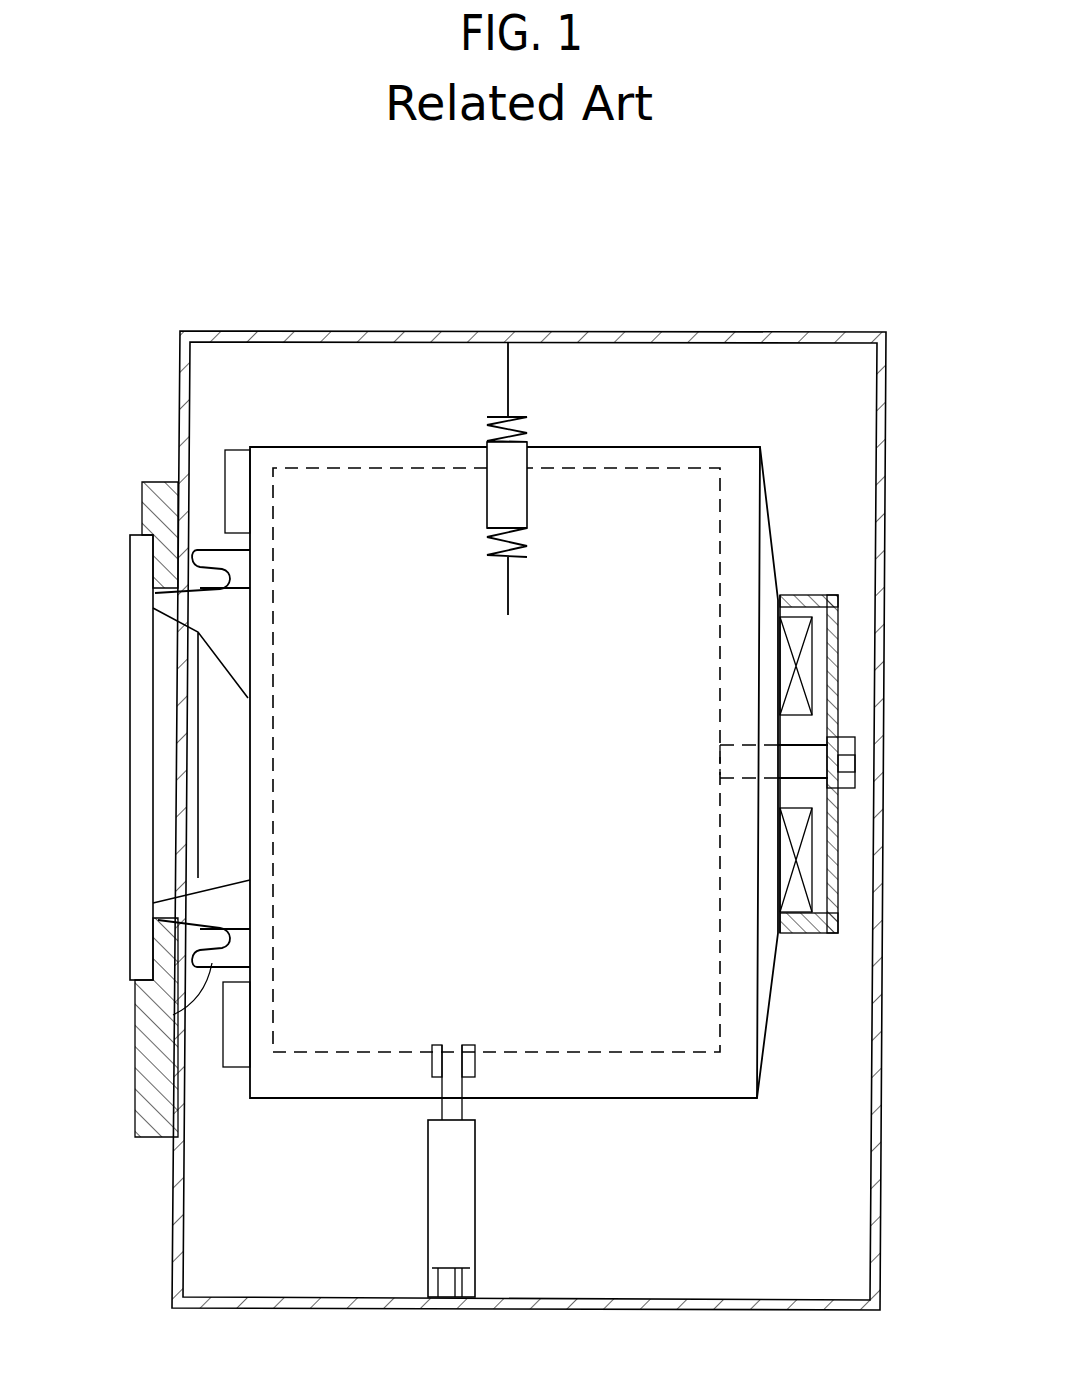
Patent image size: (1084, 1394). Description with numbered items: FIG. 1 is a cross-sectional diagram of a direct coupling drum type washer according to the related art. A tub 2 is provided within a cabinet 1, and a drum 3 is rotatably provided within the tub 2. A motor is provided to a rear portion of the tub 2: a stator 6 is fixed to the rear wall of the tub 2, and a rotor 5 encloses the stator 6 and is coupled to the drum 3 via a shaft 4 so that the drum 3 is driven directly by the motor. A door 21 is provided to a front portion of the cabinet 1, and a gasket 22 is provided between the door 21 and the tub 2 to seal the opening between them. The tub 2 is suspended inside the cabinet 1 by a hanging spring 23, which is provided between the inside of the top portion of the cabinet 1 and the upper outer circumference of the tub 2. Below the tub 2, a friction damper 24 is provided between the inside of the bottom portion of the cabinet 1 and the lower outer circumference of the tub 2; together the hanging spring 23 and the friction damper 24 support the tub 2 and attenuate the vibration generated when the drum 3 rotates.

The cabinet 1 is at (287, 331).
The tub 2 is at (659, 447).
The drum 3 is at (388, 470).
The rotor shaft 4 is at (800, 758).
The rotor 5 is at (832, 868).
The stator 6 is at (803, 663).
The door 21 is at (140, 773).
The gasket 22 is at (173, 1015).
The hanging spring 23 is at (517, 432).
The friction damper 24 is at (458, 1203).